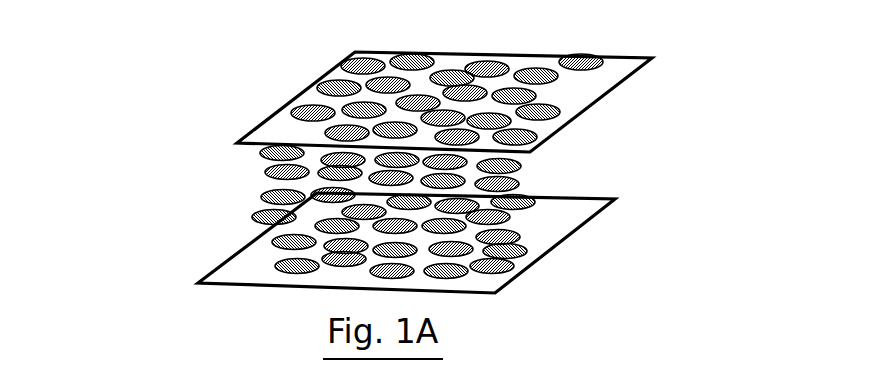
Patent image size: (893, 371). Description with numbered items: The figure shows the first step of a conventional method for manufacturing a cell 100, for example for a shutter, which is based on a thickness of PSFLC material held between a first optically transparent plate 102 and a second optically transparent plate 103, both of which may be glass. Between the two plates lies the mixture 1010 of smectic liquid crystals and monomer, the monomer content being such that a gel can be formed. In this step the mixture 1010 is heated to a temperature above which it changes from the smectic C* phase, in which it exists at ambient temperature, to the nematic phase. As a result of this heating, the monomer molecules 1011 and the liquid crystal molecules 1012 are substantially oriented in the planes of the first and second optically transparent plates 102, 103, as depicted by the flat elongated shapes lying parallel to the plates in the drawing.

The cell 100 is at (217, 117).
The first optically transparent plate 102 is at (618, 57).
The second optically transparent plate 103 is at (570, 237).
The mixture 1010 is at (550, 167).
The monomer molecules 1011 is at (262, 173).
The liquid crystal molecules 1012 is at (280, 270).